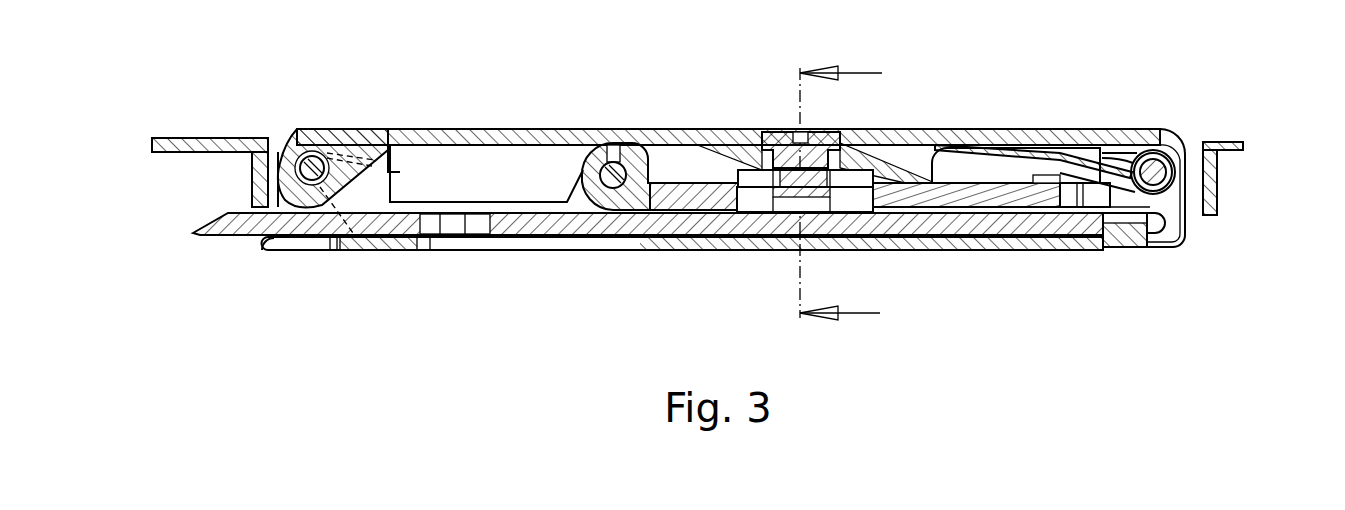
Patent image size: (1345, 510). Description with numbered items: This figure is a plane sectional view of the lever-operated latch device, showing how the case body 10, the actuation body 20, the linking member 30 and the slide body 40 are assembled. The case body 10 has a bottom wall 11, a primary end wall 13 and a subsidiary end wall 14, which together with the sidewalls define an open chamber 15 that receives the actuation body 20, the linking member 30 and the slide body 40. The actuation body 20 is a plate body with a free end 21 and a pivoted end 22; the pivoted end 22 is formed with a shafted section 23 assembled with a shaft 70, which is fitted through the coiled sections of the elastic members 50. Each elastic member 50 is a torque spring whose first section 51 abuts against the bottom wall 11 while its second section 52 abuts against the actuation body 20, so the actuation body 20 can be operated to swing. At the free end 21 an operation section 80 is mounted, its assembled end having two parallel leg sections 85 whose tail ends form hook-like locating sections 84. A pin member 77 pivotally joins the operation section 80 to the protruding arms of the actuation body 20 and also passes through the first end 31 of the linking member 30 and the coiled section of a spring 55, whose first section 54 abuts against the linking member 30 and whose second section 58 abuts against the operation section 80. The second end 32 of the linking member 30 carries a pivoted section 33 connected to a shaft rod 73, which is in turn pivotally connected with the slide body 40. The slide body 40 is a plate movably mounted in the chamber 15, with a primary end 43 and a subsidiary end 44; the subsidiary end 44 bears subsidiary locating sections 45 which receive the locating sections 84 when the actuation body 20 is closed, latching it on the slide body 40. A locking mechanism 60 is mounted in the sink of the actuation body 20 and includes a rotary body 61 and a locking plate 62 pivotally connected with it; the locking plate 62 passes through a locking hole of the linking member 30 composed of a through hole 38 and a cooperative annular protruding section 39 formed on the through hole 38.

The case body 10 is at (190, 128).
The bottom wall 11 is at (406, 253).
The primary end wall 13 is at (258, 185).
The subsidiary end wall 14 is at (1228, 168).
The open chamber 15 is at (1205, 130).
The actuation body 20 is at (510, 127).
The free end 21 is at (925, 127).
The pivoted end 22 is at (383, 127).
The shafted section 23 is at (283, 240).
The linking member 30 is at (930, 210).
The first end 31 is at (1045, 156).
The second end 32 is at (692, 178).
The pivoted section 33 is at (672, 175).
The through hole 38 is at (832, 207).
The cooperative annular protruding section 39 is at (868, 207).
The slide body 40 is at (703, 252).
The primary end 43 is at (305, 253).
The subsidiary end 44 is at (988, 251).
The subsidiary locating section 45 is at (1130, 250).
The elastic member 50 is at (333, 178).
The first section 51 is at (320, 182).
The second section 52 is at (366, 150).
The first section 54 is at (1105, 222).
The spring 55 is at (1174, 129).
The second section 58 is at (1118, 129).
The locking mechanism 60 is at (828, 163).
The rotary body 61 is at (782, 131).
The locking plate 62 is at (770, 237).
The shaft 70 is at (283, 252).
The shaft rod 73 is at (614, 190).
The pin member 77 is at (1176, 180).
The operation section 80 is at (1068, 127).
The locating section 84 is at (1162, 244).
The leg section 85 is at (1186, 215).